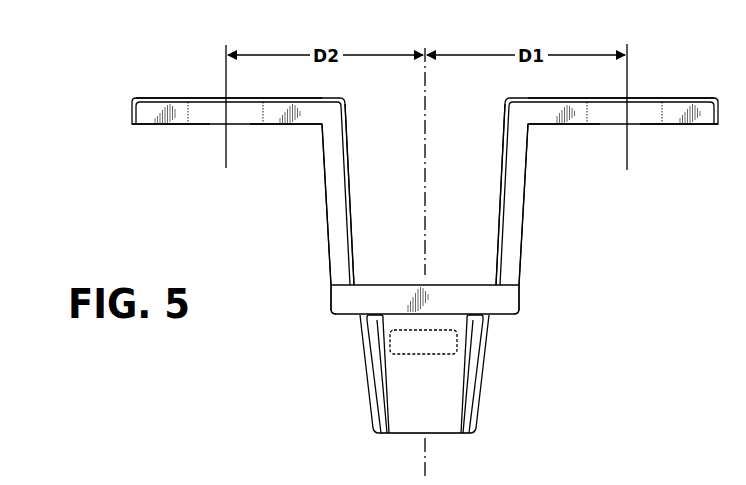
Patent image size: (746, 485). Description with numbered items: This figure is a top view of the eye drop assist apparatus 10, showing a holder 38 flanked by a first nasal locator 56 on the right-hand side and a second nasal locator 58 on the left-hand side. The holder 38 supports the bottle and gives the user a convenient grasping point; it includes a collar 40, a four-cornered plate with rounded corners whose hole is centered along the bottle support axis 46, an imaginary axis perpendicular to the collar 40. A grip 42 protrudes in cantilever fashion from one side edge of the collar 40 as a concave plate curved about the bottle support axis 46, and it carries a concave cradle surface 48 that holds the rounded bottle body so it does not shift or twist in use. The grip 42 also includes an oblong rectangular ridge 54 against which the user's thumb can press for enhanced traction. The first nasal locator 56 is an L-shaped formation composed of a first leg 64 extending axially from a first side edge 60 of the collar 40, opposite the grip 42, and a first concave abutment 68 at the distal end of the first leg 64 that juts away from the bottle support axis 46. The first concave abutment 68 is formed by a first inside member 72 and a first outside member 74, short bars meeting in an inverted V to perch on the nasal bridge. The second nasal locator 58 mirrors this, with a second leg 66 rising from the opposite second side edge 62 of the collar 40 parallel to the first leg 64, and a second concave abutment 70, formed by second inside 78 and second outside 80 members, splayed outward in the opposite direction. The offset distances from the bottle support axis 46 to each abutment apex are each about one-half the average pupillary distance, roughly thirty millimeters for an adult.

The apparatus 10 is at (627, 335).
The holder 38 is at (492, 339).
The collar 40 is at (358, 320).
The grip 42 is at (478, 419).
The bottle support axis 46 is at (427, 452).
The cradle surface 48 is at (400, 405).
The ridge 54 is at (457, 353).
The first nasal locator 56 is at (526, 238).
The second nasal locator 58 is at (324, 238).
The first side edge 60 is at (520, 298).
The first shoulder 62 is at (330, 298).
The first leg 64 is at (528, 170).
The second leg 66 is at (322, 170).
The first concave abutment 68 is at (684, 94).
The second concave abutment 70 is at (167, 94).
The first inside member 72 is at (553, 124).
The first outside member 74 is at (685, 124).
The second inside member 78 is at (293, 124).
The second outside member 80 is at (162, 124).